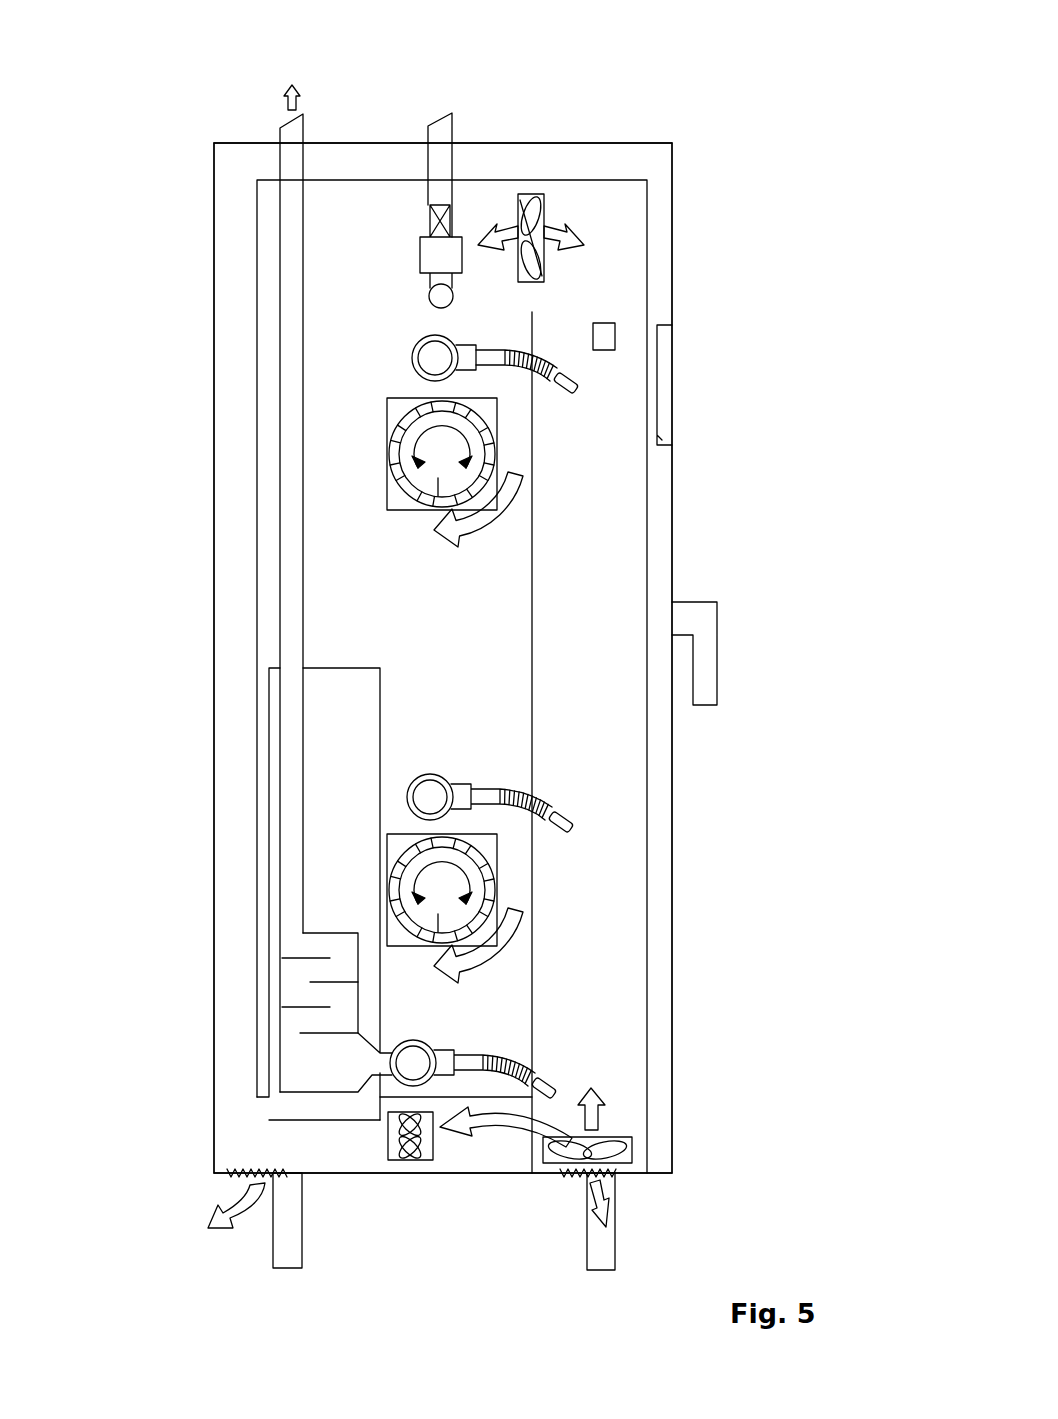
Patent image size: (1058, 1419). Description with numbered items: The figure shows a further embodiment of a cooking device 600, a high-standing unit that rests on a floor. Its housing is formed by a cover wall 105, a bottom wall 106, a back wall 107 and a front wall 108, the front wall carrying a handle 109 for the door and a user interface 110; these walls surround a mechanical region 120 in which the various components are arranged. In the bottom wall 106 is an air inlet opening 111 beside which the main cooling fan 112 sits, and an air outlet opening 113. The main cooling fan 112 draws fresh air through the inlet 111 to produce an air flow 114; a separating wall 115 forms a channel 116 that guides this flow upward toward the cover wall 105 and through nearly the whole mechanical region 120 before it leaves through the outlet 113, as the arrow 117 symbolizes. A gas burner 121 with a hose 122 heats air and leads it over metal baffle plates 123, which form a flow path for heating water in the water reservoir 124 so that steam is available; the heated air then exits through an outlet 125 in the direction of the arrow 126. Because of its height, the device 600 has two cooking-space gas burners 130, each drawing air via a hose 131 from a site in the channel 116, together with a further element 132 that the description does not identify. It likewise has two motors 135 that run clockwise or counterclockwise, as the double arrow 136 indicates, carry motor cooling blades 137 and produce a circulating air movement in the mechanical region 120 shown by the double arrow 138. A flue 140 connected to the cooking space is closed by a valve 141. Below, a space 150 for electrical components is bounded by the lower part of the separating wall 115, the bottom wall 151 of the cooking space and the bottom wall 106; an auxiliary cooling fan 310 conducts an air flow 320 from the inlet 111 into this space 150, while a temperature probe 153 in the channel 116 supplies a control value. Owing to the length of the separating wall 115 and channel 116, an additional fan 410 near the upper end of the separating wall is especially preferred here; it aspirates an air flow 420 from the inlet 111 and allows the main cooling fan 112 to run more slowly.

The cooking device 600 is at (723, 45).
The cover wall 105 is at (500, 140).
The bottom wall 106 is at (386, 1178).
The back wall 107 is at (214, 492).
The front wall 108 is at (672, 572).
The handle 109 is at (717, 652).
The user interface 110 is at (672, 422).
The air inlet opening 111 is at (617, 1190).
The main cooling fan 112 is at (632, 1146).
The air outlet opening 113 is at (232, 1178).
The air flow 114 is at (603, 1092).
The separating wall 115 is at (533, 606).
The channel 116 is at (597, 694).
The arrow 117 is at (243, 1235).
The mechanical region 120 is at (357, 205).
The gas burner 121 is at (392, 1058).
The hose 122 is at (557, 1078).
The metal baffle plates 123 is at (300, 1000).
The water reservoir 124 is at (268, 728).
The outlet 125 is at (282, 120).
The arrow 126 is at (300, 92).
The cooking-space gas burner 130 is at (445, 345).
The hose 131 is at (558, 356).
The middle hose end 132 is at (562, 808).
The motor 135 is at (437, 506).
The double arrow 136 is at (497, 430).
The motor cooling blades 137 is at (392, 420).
The double arrow 138 is at (522, 500).
The flue 140 is at (434, 120).
The valve 141 is at (428, 222).
The space for electrical components 150 is at (340, 1176).
The bottom wall of the cooking space 151 is at (483, 1145).
The temperature probe 153 is at (615, 336).
The auxiliary cooling fan 310 is at (412, 1160).
The air flow 320 is at (497, 1135).
The additional fan 410 is at (529, 194).
The air flow 420 is at (573, 232).